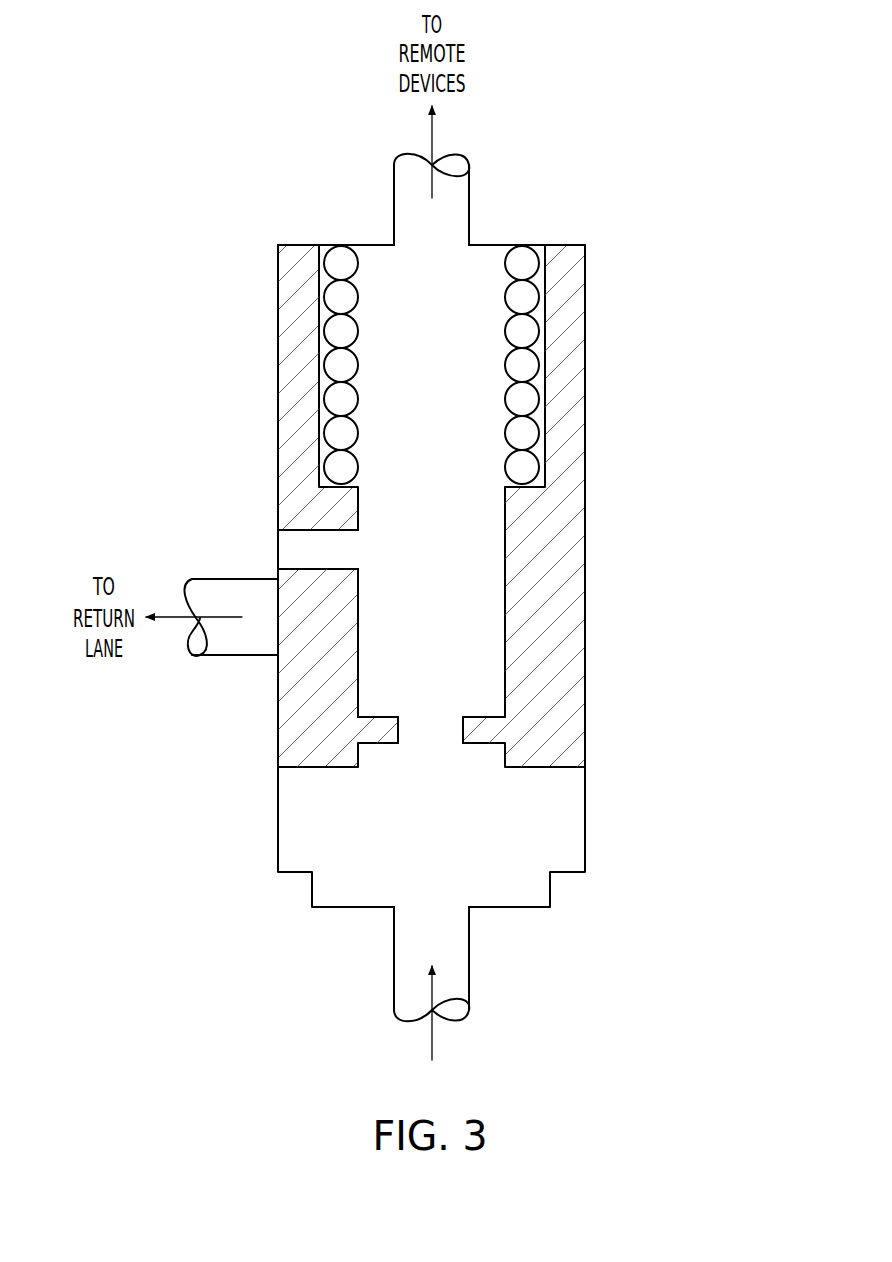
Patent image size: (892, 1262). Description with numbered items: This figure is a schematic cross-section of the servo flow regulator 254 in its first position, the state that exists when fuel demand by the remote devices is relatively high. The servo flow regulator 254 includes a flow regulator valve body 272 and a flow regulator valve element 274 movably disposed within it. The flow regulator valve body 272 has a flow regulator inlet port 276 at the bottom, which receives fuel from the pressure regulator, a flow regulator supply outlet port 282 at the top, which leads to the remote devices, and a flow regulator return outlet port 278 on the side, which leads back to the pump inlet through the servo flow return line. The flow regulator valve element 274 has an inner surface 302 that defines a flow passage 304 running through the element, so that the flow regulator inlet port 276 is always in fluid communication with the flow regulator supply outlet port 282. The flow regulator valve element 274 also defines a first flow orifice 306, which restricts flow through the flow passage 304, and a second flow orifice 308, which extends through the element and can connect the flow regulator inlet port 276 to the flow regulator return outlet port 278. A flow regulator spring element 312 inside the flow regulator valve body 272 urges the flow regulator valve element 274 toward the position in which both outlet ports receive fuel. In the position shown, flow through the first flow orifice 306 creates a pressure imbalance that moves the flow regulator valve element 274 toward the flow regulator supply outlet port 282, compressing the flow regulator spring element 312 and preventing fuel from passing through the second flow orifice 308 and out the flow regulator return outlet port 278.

The servo flow regulator 254 is at (680, 238).
The flow regulator valve body 272 is at (585, 463).
The flow regulator valve element 274 is at (573, 582).
The flow regulator inlet port 276 is at (458, 938).
The flow regulator return outlet port 278 is at (268, 610).
The flow regulator supply outlet port 282 is at (445, 238).
The inner surface 302 is at (505, 617).
The flow passage 304 is at (459, 685).
The first flow orifice 306 is at (435, 740).
The second flow orifice 308 is at (347, 548).
The flow regulator spring element 312 is at (531, 332).